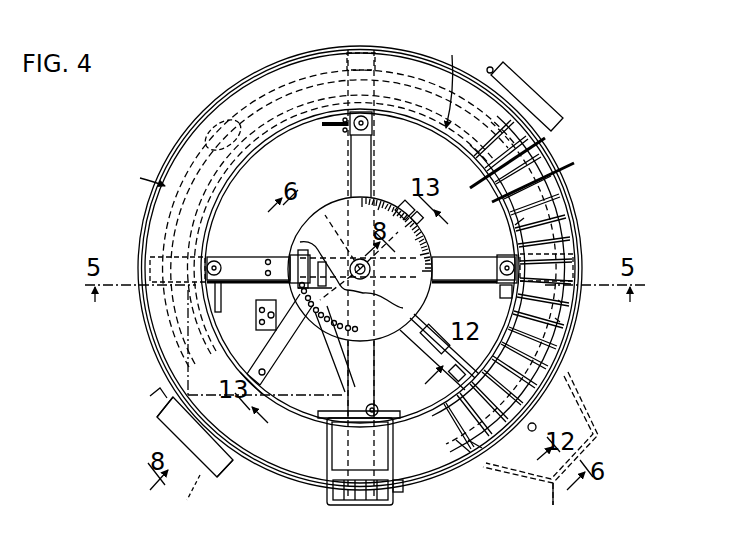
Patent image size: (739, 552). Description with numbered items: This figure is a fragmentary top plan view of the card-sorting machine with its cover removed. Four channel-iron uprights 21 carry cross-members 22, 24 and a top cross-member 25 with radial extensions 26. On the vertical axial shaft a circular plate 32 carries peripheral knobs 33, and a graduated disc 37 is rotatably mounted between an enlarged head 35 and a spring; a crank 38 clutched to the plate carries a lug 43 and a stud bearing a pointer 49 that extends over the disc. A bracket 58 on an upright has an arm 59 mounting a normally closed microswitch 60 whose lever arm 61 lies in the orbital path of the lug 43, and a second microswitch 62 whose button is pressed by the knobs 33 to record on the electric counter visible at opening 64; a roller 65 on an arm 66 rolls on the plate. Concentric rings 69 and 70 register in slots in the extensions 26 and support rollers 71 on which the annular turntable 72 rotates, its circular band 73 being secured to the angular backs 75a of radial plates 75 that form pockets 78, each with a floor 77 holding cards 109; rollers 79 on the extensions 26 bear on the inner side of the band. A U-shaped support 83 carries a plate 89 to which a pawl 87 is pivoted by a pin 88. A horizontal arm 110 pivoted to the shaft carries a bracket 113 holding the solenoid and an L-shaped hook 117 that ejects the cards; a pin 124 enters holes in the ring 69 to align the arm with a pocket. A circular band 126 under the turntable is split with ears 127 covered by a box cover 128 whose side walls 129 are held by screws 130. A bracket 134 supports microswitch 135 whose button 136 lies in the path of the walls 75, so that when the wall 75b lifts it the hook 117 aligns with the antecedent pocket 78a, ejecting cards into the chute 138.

The uprights 21 is at (328, 126).
The cross-member 22 is at (252, 257).
The cross-member 24 is at (372, 158).
The top cross-member 25 is at (448, 257).
The radial extensions 26 is at (378, 47).
The circular plate 32 is at (376, 341).
The knobs 33 is at (352, 341).
The enlarged head 35 is at (340, 250).
The graduated disc 37 is at (328, 200).
The crank 38 is at (393, 234).
The lug 43 is at (424, 215).
The pointer 49 is at (402, 203).
The bracket 58 is at (218, 300).
The arm 59 is at (270, 258).
The microswitch 60 is at (256, 322).
The lever arm 61 is at (268, 330).
The second microswitch 62 is at (297, 254).
The opening for electric counter 64 is at (330, 497).
The roller 65 is at (316, 250).
The arm 66 is at (329, 307).
The ring 69 is at (262, 100).
The ring 70 is at (276, 118).
The rollers 71 is at (206, 134).
The annular turntable 72 is at (452, 82).
The circular band 73 is at (242, 128).
The plates or walls 75 is at (533, 137).
The angular webs or backs 75a is at (516, 224).
The wall 75b is at (568, 372).
The flat lining or floor 77 is at (546, 138).
The pockets 78 is at (570, 212).
The pocket 78a is at (496, 456).
The roller 79 is at (369, 123).
The U-shaped support 83 is at (316, 338).
The pawl 87 is at (290, 355).
The pin 88 is at (258, 392).
The plate 89 is at (266, 376).
The cards 109 is at (574, 163).
The horizontal arm 110 is at (472, 452).
The bracket 113 is at (420, 350).
The L-shaped member or hook 117 is at (448, 380).
The pin 124 is at (530, 431).
The circular band 126 is at (136, 171).
The ears 127 is at (208, 478).
The box cover 128 is at (170, 420).
The side walls 129 is at (160, 402).
The screws 130 is at (158, 388).
The bracket 134 is at (506, 298).
The microswitch 135 is at (560, 322).
The actuating lever or button 136 is at (562, 303).
The chute 138 is at (553, 505).